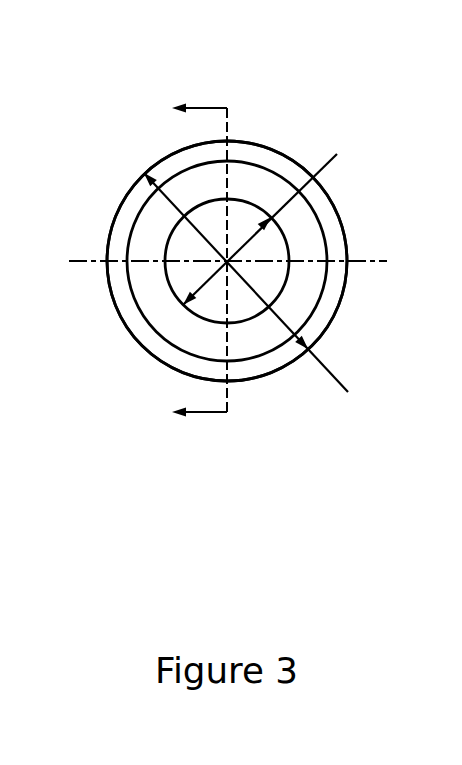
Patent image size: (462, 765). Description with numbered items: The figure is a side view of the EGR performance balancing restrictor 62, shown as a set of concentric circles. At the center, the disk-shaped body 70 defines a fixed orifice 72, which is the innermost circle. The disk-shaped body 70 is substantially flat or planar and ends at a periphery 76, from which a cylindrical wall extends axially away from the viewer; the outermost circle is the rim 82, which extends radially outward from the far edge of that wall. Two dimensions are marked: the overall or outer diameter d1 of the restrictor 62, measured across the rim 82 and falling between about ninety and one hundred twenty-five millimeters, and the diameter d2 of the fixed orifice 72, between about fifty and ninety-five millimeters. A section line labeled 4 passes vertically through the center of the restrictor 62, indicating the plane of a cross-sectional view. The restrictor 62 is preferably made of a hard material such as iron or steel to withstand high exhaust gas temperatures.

The EGR performance balancing restrictor 62 is at (236, 243).
The rim 82 is at (320, 195).
The disk-shaped body 70 is at (302, 236).
The fixed orifice 72 is at (268, 290).
The periphery 76 is at (330, 345).
The section line 4- 4 is at (208, 258).
The outer diameter d1 is at (258, 293).
The diameter of the fixed orifice d2 is at (269, 219).